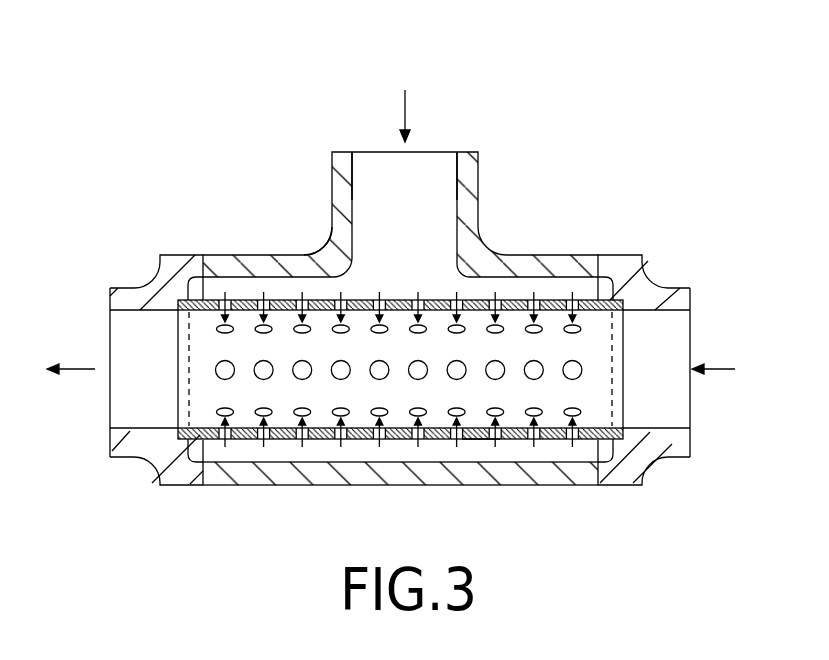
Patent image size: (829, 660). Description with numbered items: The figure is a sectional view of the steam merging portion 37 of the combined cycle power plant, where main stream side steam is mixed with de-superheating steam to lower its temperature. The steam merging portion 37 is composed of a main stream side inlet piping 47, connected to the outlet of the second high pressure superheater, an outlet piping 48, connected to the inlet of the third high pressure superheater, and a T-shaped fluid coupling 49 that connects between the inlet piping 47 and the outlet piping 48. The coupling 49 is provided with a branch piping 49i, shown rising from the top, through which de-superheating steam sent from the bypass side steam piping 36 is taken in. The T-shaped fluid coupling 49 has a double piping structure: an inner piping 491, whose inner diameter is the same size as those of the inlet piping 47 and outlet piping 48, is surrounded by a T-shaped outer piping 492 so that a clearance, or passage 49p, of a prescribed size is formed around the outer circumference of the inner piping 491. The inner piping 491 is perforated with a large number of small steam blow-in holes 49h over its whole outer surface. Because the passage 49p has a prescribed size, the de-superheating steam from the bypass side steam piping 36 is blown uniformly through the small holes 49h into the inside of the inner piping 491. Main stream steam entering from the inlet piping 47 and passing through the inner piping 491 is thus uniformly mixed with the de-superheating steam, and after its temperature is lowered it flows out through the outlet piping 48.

The bypass side steam piping 36 is at (426, 84).
The steam merging portion 37 is at (515, 194).
The main stream side inlet piping 47 is at (633, 254).
The outlet piping 48 is at (177, 254).
The T-shaped fluid coupling 49 is at (479, 221).
The outer piping 492 is at (328, 246).
The branch piping 49i is at (353, 168).
The small steam blow-in holes 49h is at (538, 303).
The clearance (passage) 49p is at (527, 450).
The inner piping 491 is at (473, 442).